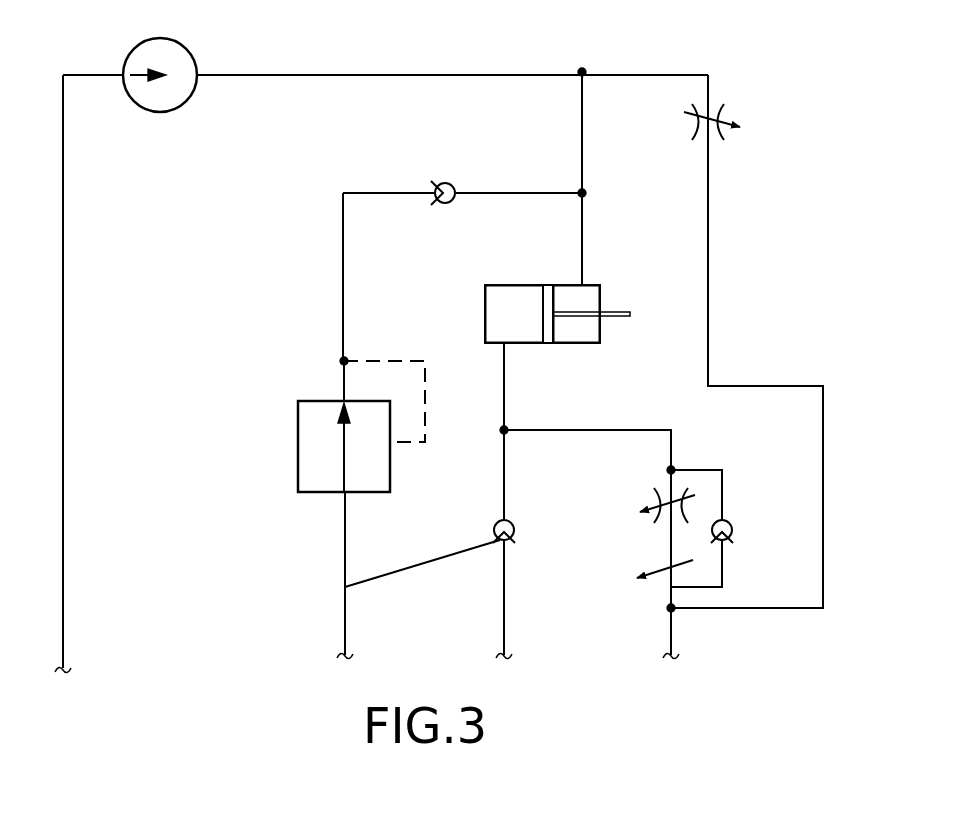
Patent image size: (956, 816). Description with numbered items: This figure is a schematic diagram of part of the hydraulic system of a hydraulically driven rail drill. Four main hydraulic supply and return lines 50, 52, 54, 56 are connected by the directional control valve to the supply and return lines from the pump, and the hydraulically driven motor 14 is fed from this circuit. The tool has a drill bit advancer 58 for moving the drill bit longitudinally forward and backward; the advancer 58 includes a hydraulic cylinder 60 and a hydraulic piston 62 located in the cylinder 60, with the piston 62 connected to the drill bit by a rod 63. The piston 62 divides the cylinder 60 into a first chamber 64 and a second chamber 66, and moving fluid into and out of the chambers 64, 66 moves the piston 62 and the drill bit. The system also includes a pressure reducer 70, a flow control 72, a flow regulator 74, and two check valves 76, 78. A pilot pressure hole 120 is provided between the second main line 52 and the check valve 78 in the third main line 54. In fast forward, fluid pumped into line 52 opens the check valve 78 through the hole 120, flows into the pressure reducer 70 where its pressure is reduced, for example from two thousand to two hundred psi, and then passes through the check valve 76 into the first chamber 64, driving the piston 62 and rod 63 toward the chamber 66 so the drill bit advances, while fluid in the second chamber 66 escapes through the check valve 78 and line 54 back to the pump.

The hydraulically driven motor 14 is at (158, 37).
The main hydraulic line 50 is at (63, 606).
The second main line 52 is at (345, 620).
The third main line 54 is at (505, 612).
The main hydraulic line 56 is at (671, 646).
The drill bit advancer 58 is at (572, 345).
The hydraulic cylinder 60 is at (485, 316).
The hydraulic piston 62 is at (545, 345).
The rod 63 is at (612, 303).
The first chamber 64 is at (592, 330).
The second chamber 66 is at (520, 284).
The pressure reducer 70 is at (302, 460).
The flow control 72 is at (740, 98).
The flow regulator 74 is at (722, 576).
The check valve 76 is at (449, 183).
The check valve 78 is at (511, 516).
The pilot pressure hole 120 is at (380, 577).